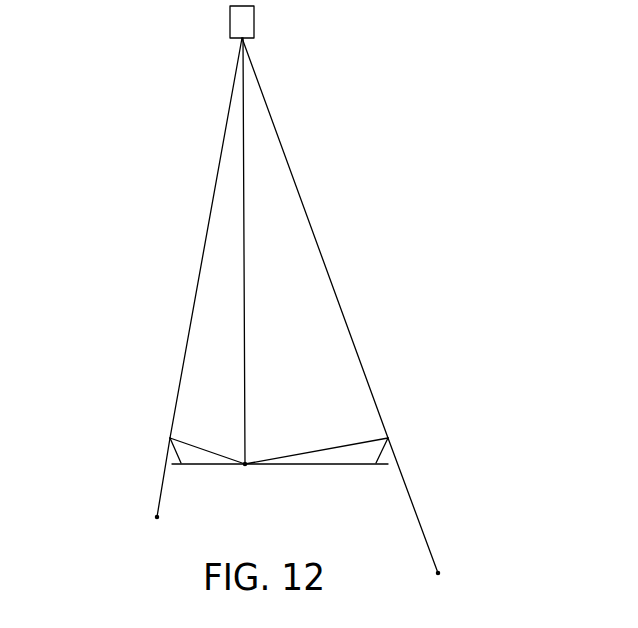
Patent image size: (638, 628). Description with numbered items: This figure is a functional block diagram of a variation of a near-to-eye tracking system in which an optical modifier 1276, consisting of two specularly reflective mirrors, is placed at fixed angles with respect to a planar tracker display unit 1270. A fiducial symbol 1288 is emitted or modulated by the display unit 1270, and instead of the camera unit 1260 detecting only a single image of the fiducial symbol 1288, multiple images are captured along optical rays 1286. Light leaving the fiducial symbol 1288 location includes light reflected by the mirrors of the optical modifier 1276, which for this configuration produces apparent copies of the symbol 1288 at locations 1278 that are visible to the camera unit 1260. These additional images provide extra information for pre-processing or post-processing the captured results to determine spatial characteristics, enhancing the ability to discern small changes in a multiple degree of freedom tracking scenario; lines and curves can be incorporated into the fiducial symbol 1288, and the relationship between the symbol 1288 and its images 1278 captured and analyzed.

The camera unit 1260 is at (229, 24).
The optical rays 1286 is at (290, 166).
The optical modifier 1276 is at (163, 429).
The locations of apparent copies of symbol 1278 is at (157, 517).
The tracker display unit 1270 is at (323, 466).
The fiducial symbol 1288 is at (245, 466).